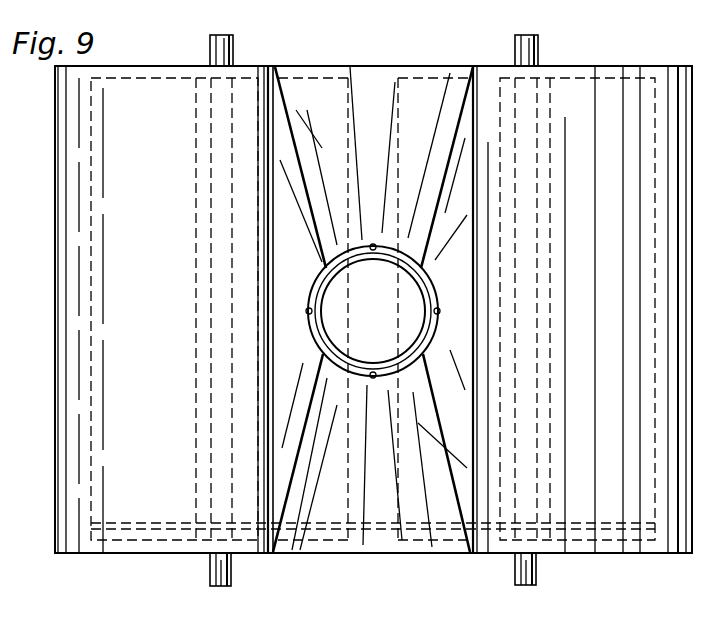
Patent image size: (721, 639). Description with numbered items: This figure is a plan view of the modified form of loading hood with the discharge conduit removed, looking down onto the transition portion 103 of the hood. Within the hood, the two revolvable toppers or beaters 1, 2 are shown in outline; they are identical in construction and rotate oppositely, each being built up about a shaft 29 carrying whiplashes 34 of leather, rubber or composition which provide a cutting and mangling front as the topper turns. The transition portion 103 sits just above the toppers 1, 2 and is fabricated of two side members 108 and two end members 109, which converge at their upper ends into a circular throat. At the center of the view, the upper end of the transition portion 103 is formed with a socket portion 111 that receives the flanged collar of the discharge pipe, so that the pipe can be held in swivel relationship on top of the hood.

The leading revolvable topper member 1 is at (585, 97).
The revolvable topper member 2 is at (140, 80).
The shaft 29 is at (234, 42).
The whiplashes 34 is at (607, 527).
The transition portion 103 is at (416, 100).
The side members 108 is at (316, 95).
The end members 109 is at (283, 488).
The socket portion 111 is at (368, 246).